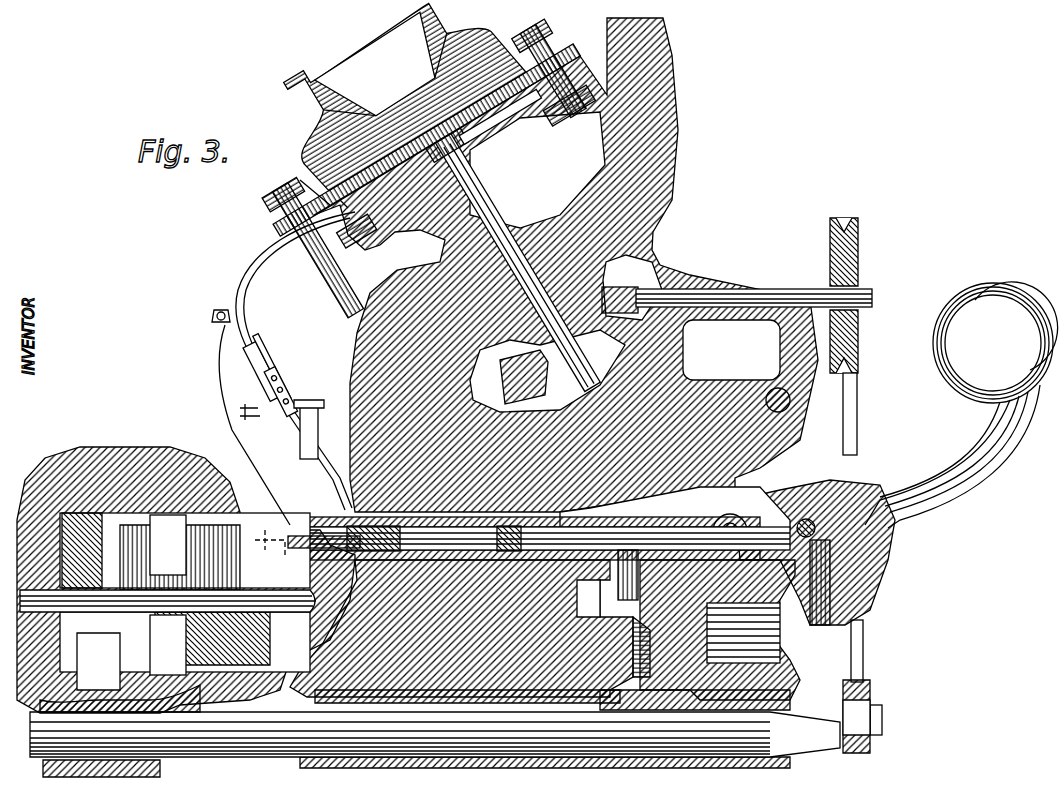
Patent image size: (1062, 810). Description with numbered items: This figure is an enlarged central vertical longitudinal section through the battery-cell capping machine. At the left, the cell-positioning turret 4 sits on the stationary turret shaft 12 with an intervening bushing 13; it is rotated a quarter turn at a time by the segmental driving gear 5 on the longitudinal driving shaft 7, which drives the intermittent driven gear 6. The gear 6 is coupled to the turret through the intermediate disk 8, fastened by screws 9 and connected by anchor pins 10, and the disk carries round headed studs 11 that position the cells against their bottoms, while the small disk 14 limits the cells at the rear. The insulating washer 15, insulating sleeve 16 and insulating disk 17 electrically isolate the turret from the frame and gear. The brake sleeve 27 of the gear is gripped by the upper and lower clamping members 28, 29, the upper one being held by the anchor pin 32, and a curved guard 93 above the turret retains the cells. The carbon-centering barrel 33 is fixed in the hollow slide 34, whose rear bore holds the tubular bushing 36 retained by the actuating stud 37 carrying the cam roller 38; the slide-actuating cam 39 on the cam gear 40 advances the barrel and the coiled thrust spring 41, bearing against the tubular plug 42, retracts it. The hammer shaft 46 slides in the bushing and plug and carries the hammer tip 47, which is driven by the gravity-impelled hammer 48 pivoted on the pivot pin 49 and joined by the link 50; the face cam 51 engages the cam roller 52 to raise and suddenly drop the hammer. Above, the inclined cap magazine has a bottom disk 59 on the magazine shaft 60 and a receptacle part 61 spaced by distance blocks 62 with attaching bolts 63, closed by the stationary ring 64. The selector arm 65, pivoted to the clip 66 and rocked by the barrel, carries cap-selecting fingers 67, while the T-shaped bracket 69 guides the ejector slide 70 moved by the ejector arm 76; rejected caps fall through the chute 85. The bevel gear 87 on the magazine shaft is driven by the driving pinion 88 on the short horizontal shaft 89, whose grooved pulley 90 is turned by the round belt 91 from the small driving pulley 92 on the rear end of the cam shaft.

The cell-positioning turret 4 is at (27, 583).
The segmental driving gear 5 is at (182, 450).
The intermittent driven gear 6 is at (93, 680).
The longitudinal driving shaft 7 is at (815, 696).
The intermediate disk 8 is at (172, 680).
The screws 9 is at (218, 440).
The anchor pins 10 is at (218, 455).
The round headed studs 11 is at (187, 612).
The stationary turret shaft 12 is at (225, 392).
The bushing 13 is at (232, 645).
The small disk 14 is at (265, 648).
The insulating washer 15 is at (292, 655).
The insulating sleeve 16 is at (205, 640).
The insulating disk 17 is at (163, 520).
The brake sleeve 27 is at (13, 637).
The upper clamping member 28 is at (11, 528).
The lower clamping member 29 is at (13, 663).
The anchor pin 32 is at (105, 520).
The carbon-centering barrel 33 is at (300, 538).
The slide 34 is at (452, 580).
The tubular bushing 36 is at (530, 525).
The actuating stud 37 is at (642, 560).
The cam roller 38 is at (589, 631).
The slide-actuating cam 39 is at (640, 662).
The cam gear 40 is at (690, 572).
The coiled thrust spring 41 is at (615, 515).
The tubular plug 42 is at (452, 525).
The hammer shaft 46 is at (712, 525).
The hammer tip 47 is at (350, 560).
The gravity-impelled hammer 48 is at (961, 405).
The pivot pin 49 is at (790, 400).
The link 50 is at (740, 510).
The face cam 51 is at (777, 661).
The cam roller 52 is at (812, 600).
The bottom disk 59 is at (500, 116).
The magazine shaft 60 is at (518, 262).
The receptacle part 61 is at (394, 97).
The distance blocks 62 is at (553, 71).
The attaching bolts 63 is at (466, 166).
The stationary ring 64 is at (317, 250).
The selector arm 65 is at (214, 333).
The clip 66 is at (226, 296).
The cap-selecting fingers 67 is at (240, 412).
The T-shaped bracket 69 is at (283, 378).
The ejector slide 70 is at (300, 395).
The ejector arm 76 is at (332, 423).
The chute 85 is at (262, 362).
The bevel gear 87 is at (512, 386).
The driving pinion 88 is at (628, 290).
The short horizontal shaft 89 is at (758, 291).
The grooved pulley 90 is at (858, 231).
The round belt 91 is at (850, 407).
The small driving pulley 92 is at (880, 690).
The curved guard 93 is at (245, 512).